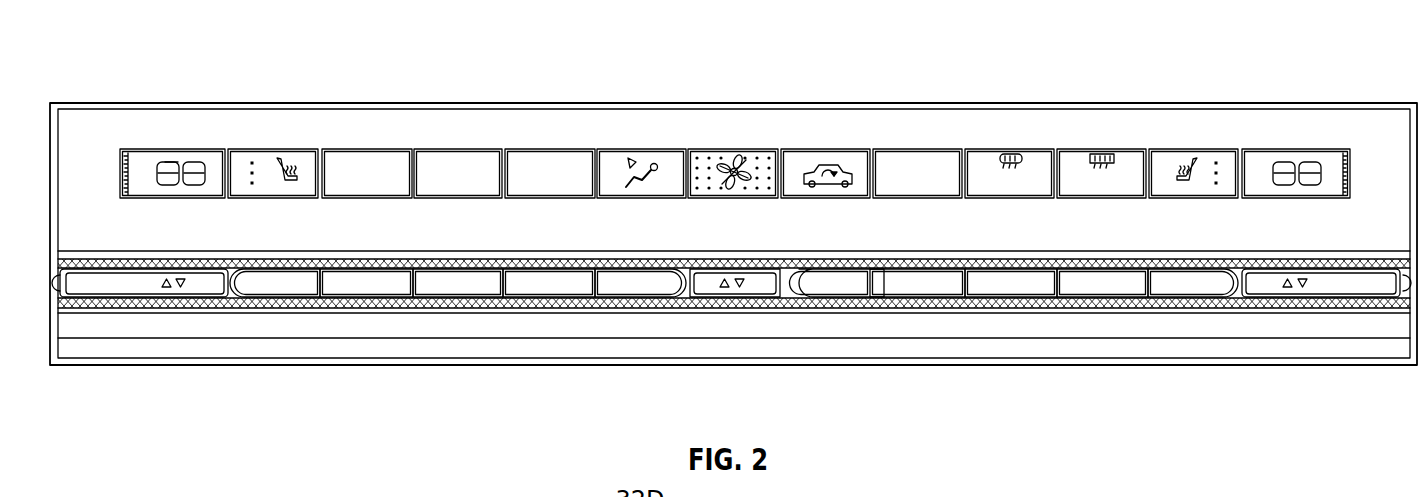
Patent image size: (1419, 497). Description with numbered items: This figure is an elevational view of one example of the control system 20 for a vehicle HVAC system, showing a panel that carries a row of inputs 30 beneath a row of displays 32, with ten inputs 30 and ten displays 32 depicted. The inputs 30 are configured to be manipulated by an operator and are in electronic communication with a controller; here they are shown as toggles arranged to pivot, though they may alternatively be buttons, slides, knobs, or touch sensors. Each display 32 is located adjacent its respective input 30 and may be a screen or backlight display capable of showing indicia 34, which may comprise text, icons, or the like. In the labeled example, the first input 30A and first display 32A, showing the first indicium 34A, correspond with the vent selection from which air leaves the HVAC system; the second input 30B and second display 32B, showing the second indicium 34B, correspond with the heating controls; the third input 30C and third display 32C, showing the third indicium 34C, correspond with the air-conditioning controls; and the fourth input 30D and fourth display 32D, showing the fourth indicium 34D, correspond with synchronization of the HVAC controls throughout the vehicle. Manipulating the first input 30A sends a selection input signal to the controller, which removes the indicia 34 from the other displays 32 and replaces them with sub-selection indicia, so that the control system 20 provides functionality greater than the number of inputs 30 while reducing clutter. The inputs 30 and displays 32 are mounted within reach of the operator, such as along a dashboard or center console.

The control system 20 is at (132, 368).
The inputs 30 is at (287, 283).
The first input 30A is at (633, 283).
The second input 30B is at (552, 283).
The third input 30C is at (457, 283).
The fourth input 30D is at (385, 283).
The displays 32 is at (295, 157).
The first display 32A is at (670, 153).
The second display 32B is at (582, 153).
The third display 32C is at (480, 153).
The fourth display 32D is at (358, 153).
The indicia 34 is at (280, 157).
The first indicium 34A is at (645, 153).
The second indicium 34B is at (553, 153).
The third indicium 34C is at (462, 153).
The fourth indicium 34D is at (367, 173).